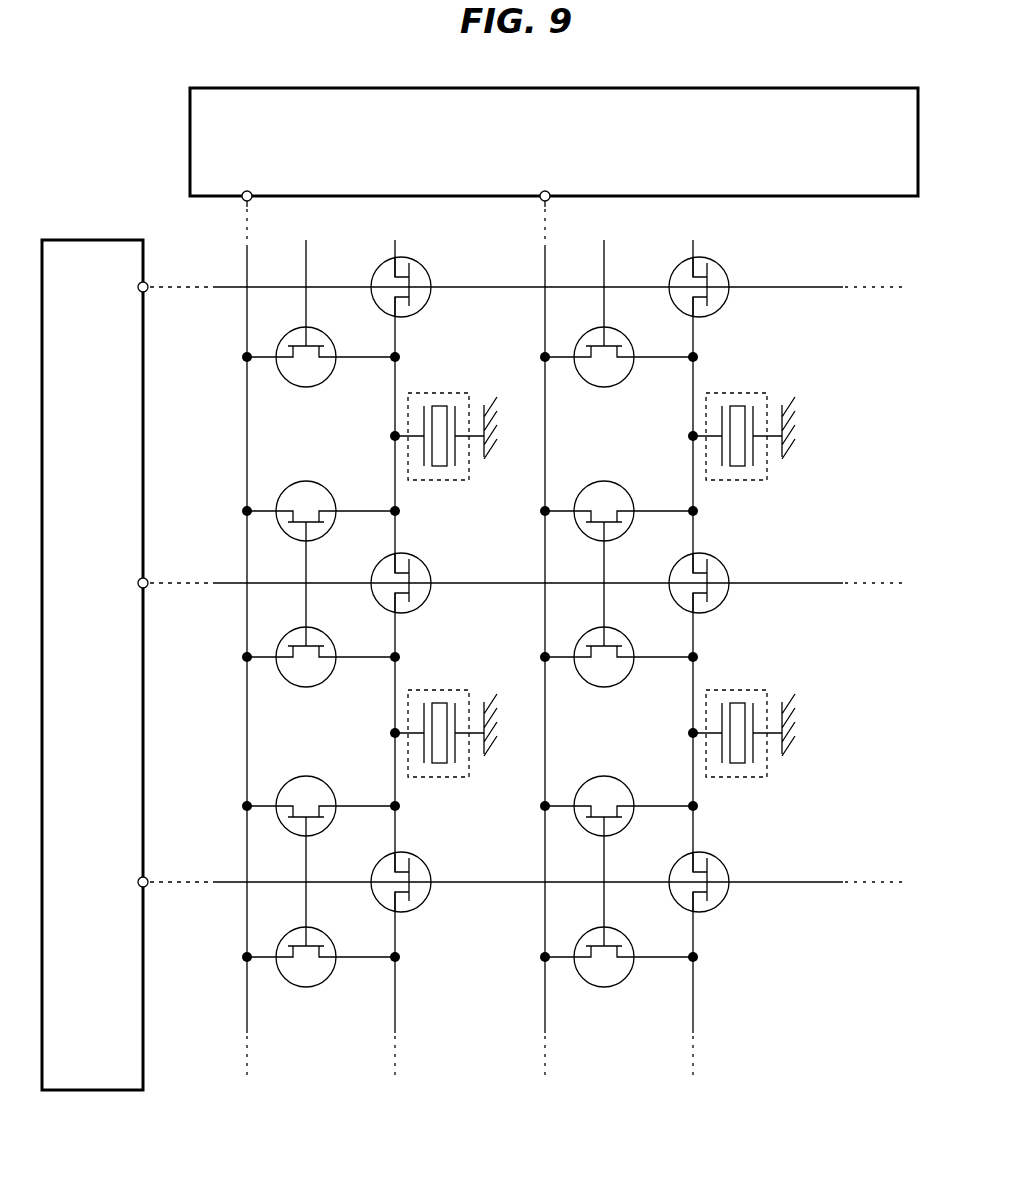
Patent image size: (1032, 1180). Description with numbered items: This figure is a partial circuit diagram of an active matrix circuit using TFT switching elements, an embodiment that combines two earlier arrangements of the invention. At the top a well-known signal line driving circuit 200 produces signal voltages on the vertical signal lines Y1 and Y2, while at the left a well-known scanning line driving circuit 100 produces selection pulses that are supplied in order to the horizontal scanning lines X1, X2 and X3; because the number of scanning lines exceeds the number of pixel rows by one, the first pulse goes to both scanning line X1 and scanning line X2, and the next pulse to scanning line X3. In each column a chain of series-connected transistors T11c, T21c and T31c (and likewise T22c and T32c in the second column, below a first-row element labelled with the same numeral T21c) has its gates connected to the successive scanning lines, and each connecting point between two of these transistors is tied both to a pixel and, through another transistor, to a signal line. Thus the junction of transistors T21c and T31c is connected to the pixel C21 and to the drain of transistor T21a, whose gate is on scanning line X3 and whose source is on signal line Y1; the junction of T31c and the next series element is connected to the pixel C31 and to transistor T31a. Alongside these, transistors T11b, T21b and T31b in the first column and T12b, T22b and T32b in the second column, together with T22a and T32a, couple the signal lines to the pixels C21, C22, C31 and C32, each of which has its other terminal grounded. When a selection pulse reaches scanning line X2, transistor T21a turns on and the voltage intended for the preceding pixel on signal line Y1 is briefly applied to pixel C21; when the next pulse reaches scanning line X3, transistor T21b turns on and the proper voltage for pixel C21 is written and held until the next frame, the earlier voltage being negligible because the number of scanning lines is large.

The scanning line driving circuit 100 is at (98, 240).
The signal line driving circuit 200 is at (190, 165).
The scanning line X1 is at (230, 288).
The scanning line X2 is at (230, 584).
The scanning line X3 is at (230, 883).
The signal line Y1 is at (246, 268).
The signal line Y2 is at (544, 268).
The TFT switching element T11b is at (306, 381).
The TFT switching element T11c is at (424, 264).
The TFT switching element T12b is at (604, 381).
The TFT switching element T21a is at (316, 483).
The TFT switching element T21b is at (311, 684).
The TFT switching element T21c is at (424, 564).
The TFT switching element T22a is at (614, 483).
The TFT switching element T22b is at (609, 684).
The TFT switching element T22c is at (722, 564).
The TFT switching element T31a is at (316, 779).
The TFT switching element T31b is at (312, 984).
The TFT switching element T31c is at (424, 863).
The TFT switching element T32a is at (614, 779).
The TFT switching element T32b is at (610, 984).
The TFT switching element T32c is at (722, 863).
The pixel C21 is at (438, 392).
The pixel C22 is at (728, 392).
The pixel C31 is at (430, 690).
The pixel C32 is at (727, 690).